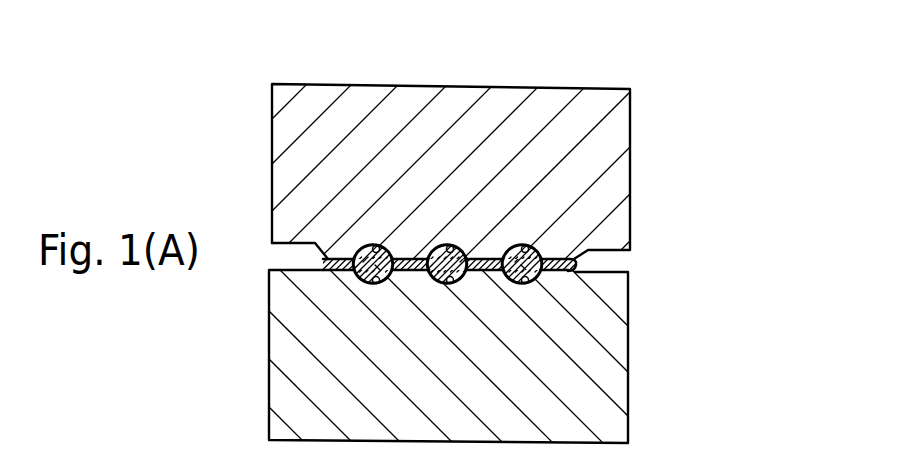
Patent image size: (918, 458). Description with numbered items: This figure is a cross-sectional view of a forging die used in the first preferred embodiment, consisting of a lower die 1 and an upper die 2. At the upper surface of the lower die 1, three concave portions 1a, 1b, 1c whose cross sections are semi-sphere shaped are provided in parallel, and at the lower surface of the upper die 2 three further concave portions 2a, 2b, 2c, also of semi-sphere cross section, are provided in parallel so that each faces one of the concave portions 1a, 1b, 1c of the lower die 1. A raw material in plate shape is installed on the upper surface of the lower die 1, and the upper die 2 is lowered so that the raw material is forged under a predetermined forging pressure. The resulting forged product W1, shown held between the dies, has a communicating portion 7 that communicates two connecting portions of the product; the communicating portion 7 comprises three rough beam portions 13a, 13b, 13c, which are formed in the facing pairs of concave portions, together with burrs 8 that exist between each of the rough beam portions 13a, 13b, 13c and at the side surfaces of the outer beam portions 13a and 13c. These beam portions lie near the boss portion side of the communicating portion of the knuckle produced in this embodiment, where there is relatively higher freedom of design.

The lower die 1 is at (290, 352).
The upper die 2 is at (302, 145).
The concave portion 1a is at (377, 288).
The concave portion 1b is at (453, 290).
The concave portion 1c is at (527, 290).
The concave portion 2a is at (365, 243).
The concave portion 2b is at (445, 243).
The concave portion 2c is at (527, 243).
The communicating portion 7 is at (612, 56).
The burrs 8 is at (565, 244).
The beam portion 13a is at (392, 245).
The beam portion 13b is at (472, 246).
The beam portion 13c is at (508, 245).
The forged product W1 is at (598, 264).